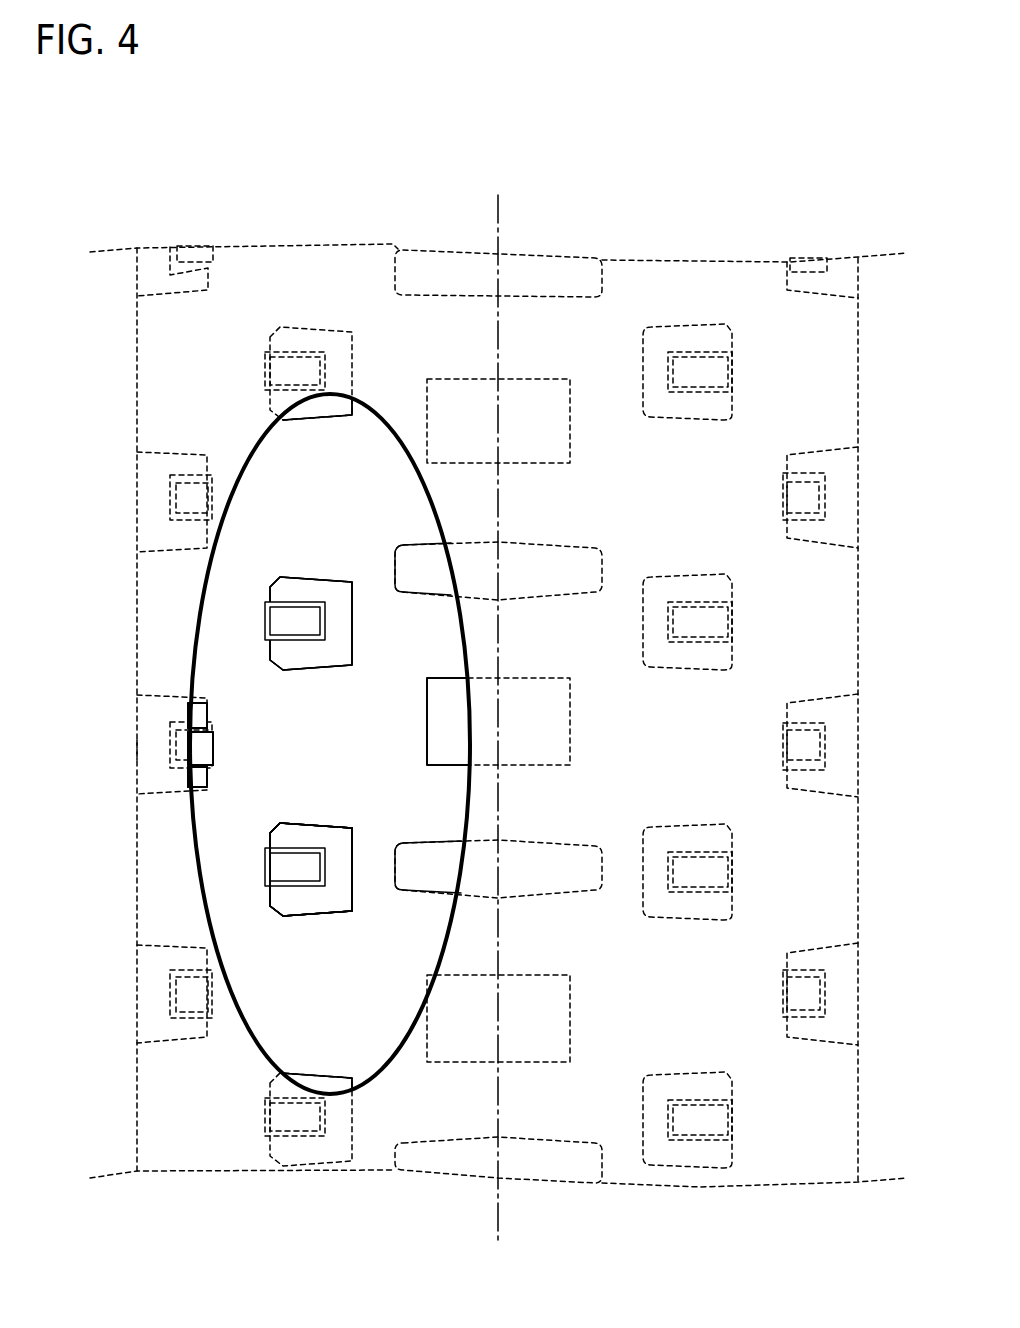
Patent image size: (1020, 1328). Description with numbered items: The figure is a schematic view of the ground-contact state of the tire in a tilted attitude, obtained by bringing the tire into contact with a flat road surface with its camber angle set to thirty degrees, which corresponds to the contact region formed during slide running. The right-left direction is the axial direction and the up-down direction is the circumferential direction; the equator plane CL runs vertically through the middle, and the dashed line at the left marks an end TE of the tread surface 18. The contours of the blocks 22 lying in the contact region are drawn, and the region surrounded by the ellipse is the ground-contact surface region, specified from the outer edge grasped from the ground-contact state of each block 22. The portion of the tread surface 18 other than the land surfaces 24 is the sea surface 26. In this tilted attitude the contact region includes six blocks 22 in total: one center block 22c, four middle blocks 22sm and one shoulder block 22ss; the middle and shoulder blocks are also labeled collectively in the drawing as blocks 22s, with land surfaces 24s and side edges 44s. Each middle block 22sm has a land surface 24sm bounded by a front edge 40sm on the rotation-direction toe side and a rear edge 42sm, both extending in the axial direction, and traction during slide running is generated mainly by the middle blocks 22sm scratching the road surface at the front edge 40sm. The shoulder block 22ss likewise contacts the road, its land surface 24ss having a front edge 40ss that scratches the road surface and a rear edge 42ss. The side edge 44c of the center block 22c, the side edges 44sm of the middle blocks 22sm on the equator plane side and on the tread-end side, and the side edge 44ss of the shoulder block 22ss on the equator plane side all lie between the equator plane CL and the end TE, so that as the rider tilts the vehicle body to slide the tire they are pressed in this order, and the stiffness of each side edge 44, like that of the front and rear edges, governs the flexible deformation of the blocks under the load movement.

The tread surface 18 is at (153, 256).
The sea surface 26 is at (158, 355).
The block 22 is at (328, 424).
The cooling hole side portion 22s is at (340, 744).
The middle block 22sm is at (315, 744).
The shoulder block 22ss is at (226, 724).
The center block 22c is at (425, 687).
The land surface 24 is at (245, 851).
The rib side portion 24s is at (246, 841).
The land surface of middle block 24sm is at (342, 898).
The land surface of shoulder block 24ss is at (197, 747).
The front edge of middle block 40sm is at (300, 668).
The front edge of shoulder block 40ss is at (197, 797).
The rear edge of middle block 42sm is at (315, 578).
The rear edge of shoulder block 42ss is at (198, 701).
The side edge 44 is at (270, 713).
The side opening wall 44s is at (265, 622).
The side edge of middle block 44sm is at (320, 725).
The side edge of shoulder block 44ss is at (170, 737).
The side edge of center block 44c is at (425, 743).
The end of tread surface TE is at (138, 750).
The equator plane CL is at (498, 1215).